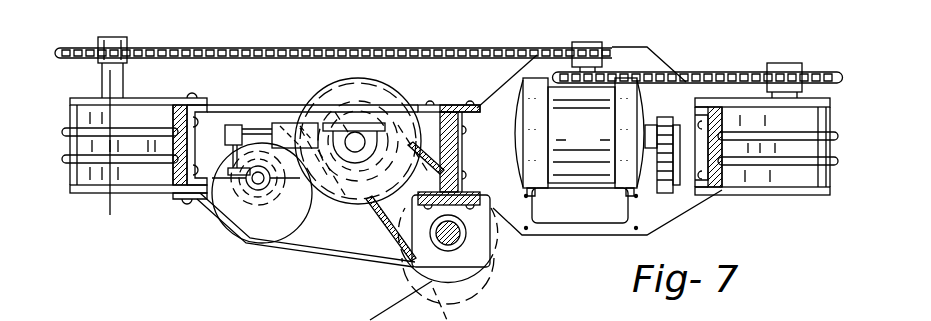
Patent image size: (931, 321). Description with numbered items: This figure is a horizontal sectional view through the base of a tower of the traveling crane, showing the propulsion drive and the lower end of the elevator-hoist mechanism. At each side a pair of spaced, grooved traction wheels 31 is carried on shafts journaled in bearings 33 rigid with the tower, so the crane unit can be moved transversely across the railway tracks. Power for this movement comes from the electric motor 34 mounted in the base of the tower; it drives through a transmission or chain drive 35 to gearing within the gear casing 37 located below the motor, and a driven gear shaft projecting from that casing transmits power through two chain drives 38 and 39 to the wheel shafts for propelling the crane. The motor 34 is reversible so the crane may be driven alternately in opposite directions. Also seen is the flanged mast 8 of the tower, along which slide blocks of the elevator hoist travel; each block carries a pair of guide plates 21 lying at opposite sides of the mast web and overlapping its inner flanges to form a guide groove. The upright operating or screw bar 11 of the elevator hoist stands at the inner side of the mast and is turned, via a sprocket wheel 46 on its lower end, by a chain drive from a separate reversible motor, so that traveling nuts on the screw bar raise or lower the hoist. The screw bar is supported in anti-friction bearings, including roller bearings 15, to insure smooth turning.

The mast 8 is at (447, 108).
The screw bar 11 is at (463, 240).
The roller bearings 15 is at (160, 87).
The guide plates 21 is at (477, 192).
The traction wheels 31 is at (805, 143).
The bearings 33 is at (770, 172).
The electric motor 34 is at (586, 137).
The chain drive 35 is at (670, 190).
The gear casing 37 is at (593, 212).
The chain drive 38 is at (706, 72).
The chain drive 39 is at (401, 49).
The sprocket wheel 46 is at (458, 279).